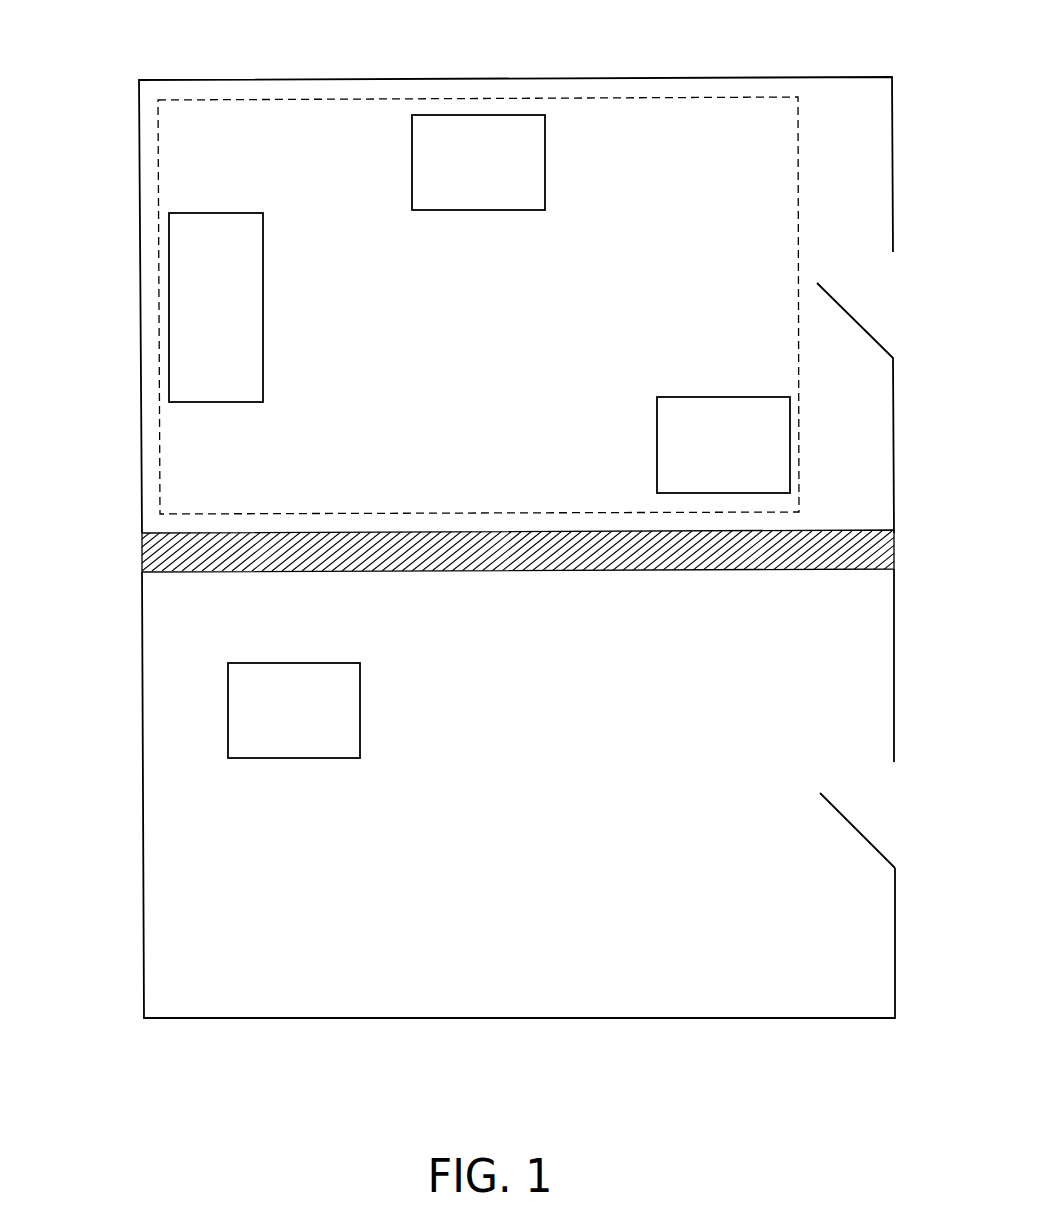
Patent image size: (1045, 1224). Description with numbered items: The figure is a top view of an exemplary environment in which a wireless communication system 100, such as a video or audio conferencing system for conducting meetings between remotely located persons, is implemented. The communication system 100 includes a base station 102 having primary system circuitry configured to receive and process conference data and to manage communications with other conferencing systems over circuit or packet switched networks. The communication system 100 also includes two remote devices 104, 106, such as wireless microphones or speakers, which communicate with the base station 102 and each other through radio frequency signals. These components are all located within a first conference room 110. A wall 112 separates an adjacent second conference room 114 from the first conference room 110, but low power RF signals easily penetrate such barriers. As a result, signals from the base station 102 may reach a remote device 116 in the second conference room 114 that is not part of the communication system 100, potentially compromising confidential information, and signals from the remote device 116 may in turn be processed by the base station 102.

The wireless communication system 100 is at (547, 369).
The base station 102 is at (198, 349).
The remote device 104 is at (460, 202).
The remote device 106 is at (705, 486).
The first conference room 110 is at (799, 31).
The wall 112 is at (143, 553).
The second conference room 114 is at (727, 1057).
The remote device 116 is at (276, 751).